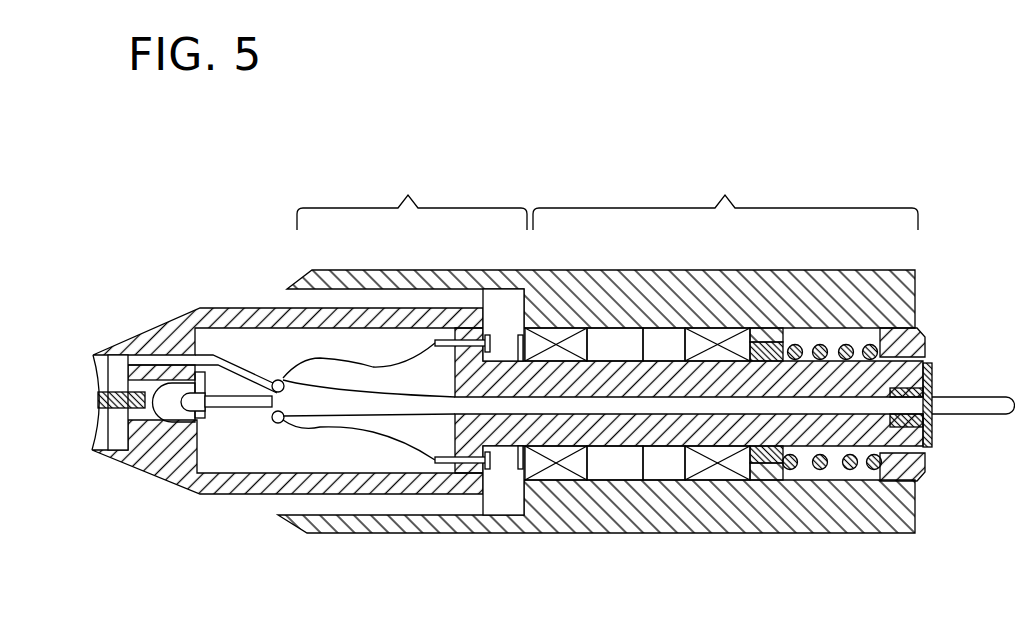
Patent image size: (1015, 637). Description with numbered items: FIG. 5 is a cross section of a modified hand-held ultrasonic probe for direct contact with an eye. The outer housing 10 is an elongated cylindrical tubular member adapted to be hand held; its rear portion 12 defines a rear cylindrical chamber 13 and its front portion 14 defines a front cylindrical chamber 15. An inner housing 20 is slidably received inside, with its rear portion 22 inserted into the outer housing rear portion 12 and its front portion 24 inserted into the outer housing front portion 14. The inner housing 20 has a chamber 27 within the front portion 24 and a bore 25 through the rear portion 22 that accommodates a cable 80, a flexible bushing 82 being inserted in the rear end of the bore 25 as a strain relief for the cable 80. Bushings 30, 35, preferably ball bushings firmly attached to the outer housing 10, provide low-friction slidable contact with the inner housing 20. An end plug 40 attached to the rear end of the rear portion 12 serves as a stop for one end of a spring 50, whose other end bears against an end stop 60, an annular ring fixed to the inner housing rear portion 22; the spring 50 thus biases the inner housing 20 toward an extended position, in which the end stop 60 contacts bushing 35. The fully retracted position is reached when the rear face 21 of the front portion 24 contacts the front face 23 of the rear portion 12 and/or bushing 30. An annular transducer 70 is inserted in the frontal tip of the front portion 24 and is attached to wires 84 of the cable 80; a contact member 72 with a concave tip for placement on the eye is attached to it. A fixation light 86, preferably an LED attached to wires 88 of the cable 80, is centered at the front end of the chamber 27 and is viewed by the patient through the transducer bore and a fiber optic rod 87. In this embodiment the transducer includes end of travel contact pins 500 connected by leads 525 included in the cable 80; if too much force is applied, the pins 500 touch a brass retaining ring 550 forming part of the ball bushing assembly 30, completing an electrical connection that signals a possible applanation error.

The outer housing 10 is at (660, 513).
The rear portion of outer housing 12 is at (725, 196).
The rear cylindrical chamber 13 is at (592, 355).
The front portion of outer housing 14 is at (412, 196).
The front cylindrical chamber 15 is at (493, 317).
The inner housing 20 is at (647, 403).
The rear face of inner housing front portion 21 is at (473, 520).
The rear portion of inner housing 22 is at (720, 377).
The front face of outer housing rear portion 23 is at (508, 505).
The front portion of inner housing 24 is at (240, 306).
The bore 25 is at (448, 421).
The chamber 27 is at (257, 464).
The bushing 30 is at (570, 330).
The bushing 35 is at (697, 349).
The end plug 40 is at (920, 348).
The spring 50 is at (793, 344).
The end stop 60 is at (775, 343).
The transducer 70 is at (123, 362).
The contact member 72 is at (104, 368).
The cable 80 is at (313, 397).
The flexible bushing 82 is at (930, 437).
The wires 84 is at (243, 367).
The fixation light 86 is at (197, 422).
The fiber optic rod 87 is at (103, 403).
The wires 88 is at (227, 407).
The end of travel contact pins 500 is at (452, 471).
The leads 525 is at (378, 366).
The brass retaining ring 550 is at (530, 335).